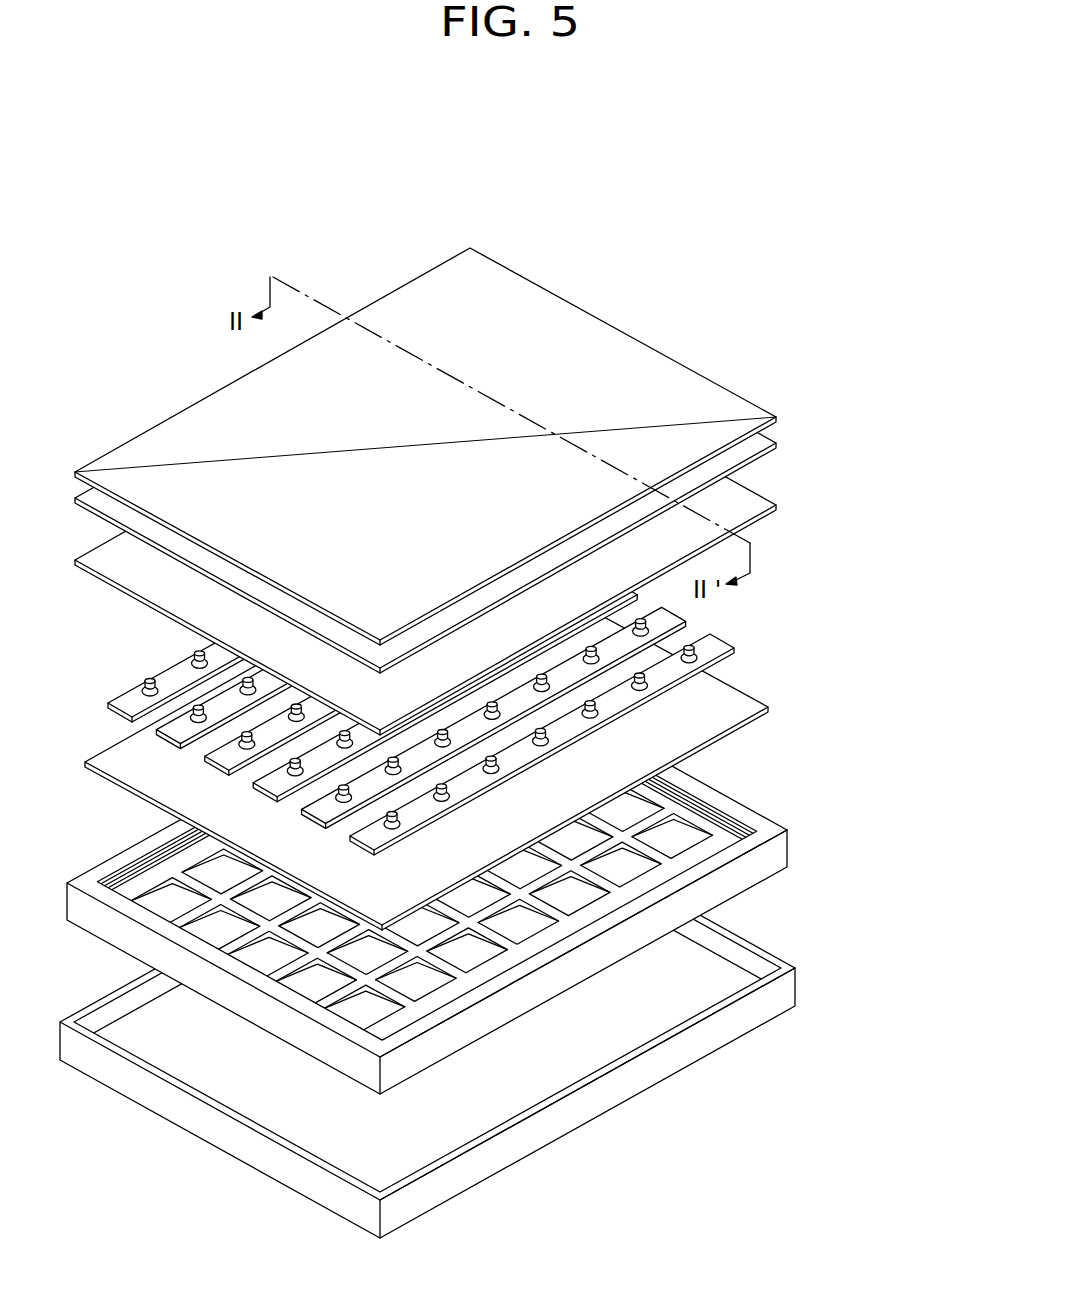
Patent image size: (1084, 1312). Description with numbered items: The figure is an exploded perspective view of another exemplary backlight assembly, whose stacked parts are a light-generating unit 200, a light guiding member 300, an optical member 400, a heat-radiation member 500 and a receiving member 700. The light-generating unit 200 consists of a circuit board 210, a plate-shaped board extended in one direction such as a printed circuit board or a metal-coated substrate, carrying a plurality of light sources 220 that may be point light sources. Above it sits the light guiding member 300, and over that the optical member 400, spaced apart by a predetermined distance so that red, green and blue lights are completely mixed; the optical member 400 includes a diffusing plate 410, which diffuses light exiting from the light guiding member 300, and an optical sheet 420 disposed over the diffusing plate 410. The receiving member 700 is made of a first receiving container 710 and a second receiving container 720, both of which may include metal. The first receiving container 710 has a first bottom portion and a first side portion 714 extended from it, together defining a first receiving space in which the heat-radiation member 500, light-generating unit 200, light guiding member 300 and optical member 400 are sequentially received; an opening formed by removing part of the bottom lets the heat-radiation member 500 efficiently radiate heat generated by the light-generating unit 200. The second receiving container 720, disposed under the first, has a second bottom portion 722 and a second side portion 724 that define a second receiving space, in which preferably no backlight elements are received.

The optical member 400 is at (488, 460).
The optical sheet 420 is at (778, 419).
The diffusing plate 410 is at (780, 444).
The light guiding member 300 is at (780, 506).
The light-generating unit 200 is at (475, 678).
The light sources 220 is at (692, 630).
The circuit board 210 is at (446, 678).
The heat-radiation member 500 is at (770, 708).
The receiving member 700 is at (495, 947).
The first receiving container 710 is at (472, 875).
The first side portion 714 is at (733, 878).
The second receiving container 720 is at (469, 1014).
The second bottom portion 722 is at (630, 1025).
The second side portion 724 is at (622, 1087).